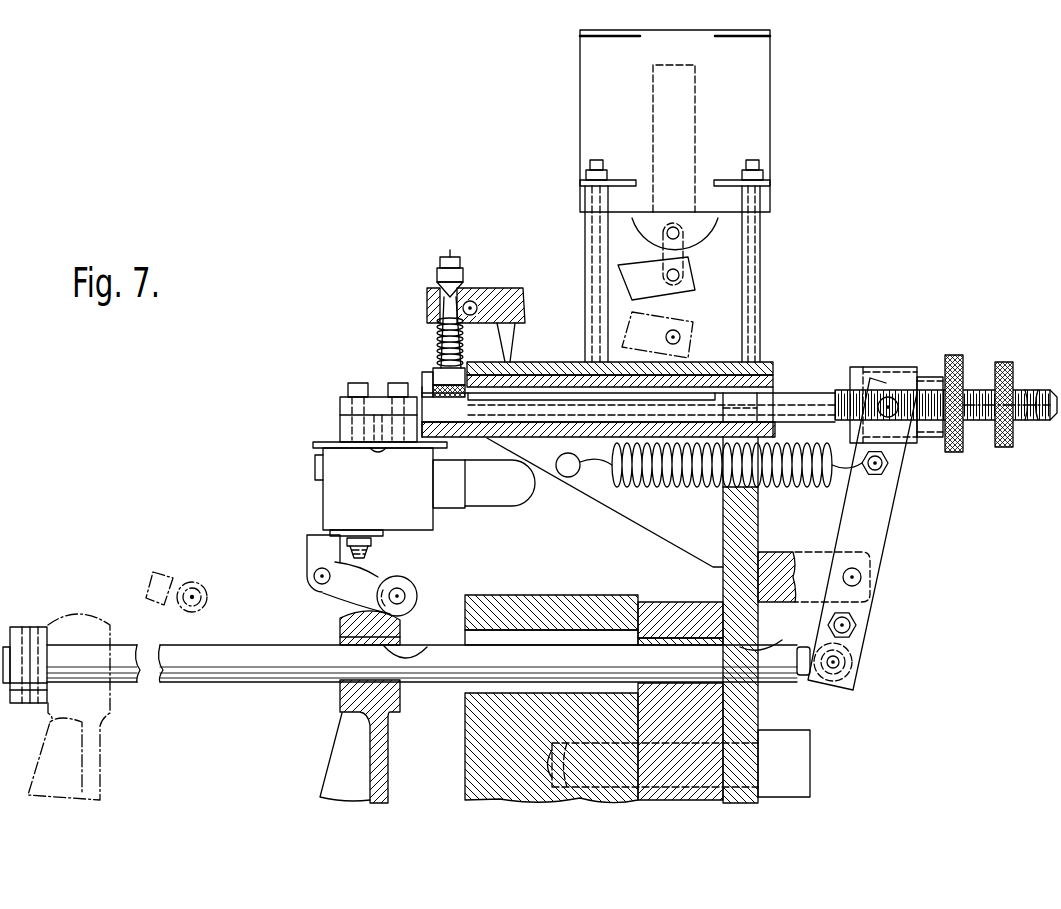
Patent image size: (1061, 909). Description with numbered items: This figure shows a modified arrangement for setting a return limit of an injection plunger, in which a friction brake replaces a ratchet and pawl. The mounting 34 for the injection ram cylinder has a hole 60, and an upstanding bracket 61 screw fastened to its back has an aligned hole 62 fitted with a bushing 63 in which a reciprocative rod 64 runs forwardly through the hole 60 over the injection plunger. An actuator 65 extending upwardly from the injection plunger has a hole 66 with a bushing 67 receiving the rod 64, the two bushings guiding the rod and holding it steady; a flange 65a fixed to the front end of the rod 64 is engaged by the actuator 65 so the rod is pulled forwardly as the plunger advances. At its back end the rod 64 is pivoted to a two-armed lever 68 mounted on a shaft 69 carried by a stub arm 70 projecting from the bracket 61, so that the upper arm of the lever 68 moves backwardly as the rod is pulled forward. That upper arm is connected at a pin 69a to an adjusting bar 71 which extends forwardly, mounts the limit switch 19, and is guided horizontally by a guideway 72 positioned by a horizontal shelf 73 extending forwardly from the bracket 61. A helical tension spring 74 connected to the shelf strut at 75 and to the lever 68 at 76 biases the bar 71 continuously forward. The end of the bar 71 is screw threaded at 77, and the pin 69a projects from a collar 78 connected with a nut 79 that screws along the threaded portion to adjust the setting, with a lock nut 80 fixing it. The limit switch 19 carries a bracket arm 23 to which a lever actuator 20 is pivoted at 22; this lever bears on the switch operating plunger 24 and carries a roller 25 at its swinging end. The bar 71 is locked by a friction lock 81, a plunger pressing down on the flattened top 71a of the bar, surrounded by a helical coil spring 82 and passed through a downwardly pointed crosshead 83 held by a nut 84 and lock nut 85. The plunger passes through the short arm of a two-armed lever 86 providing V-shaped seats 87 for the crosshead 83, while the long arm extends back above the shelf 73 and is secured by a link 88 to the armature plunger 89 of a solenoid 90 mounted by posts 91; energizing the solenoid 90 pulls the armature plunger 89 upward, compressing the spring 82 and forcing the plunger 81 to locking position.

The limit switch 19 is at (428, 518).
The actuator 20 is at (375, 577).
The pivot 22 is at (318, 583).
The arm of bracket 23 is at (307, 553).
The operating plunger 24 is at (373, 553).
The roller 25 is at (417, 593).
The mounting 34 is at (548, 597).
The hole 60 is at (465, 693).
The bracket 61 is at (762, 710).
The hole 62 is at (766, 647).
The bushing 63 is at (675, 602).
The reciprocative rod 64 is at (233, 673).
The actuator 65 is at (343, 725).
The flange 65a is at (25, 627).
The hole 66 is at (420, 650).
The bushing 67 is at (340, 643).
The two-armed lever 68 is at (887, 527).
The shaft 69 is at (862, 577).
The pin or pivot 69a is at (892, 396).
The stub arm 70 is at (815, 552).
The adjusting bar 71 is at (805, 393).
The flattened portion 71a is at (692, 393).
The guideway 72 is at (778, 382).
The horizontal shelf 73 is at (542, 363).
The helical tension spring 74 is at (665, 485).
The spring connection 75 is at (567, 473).
The spring connection 76 is at (890, 468).
The screw threaded end 77 is at (1025, 423).
The collar 78 is at (878, 367).
The nut 79 is at (963, 450).
The lock nut 80 is at (1007, 360).
The friction lock 81 is at (442, 375).
The helical coil spring 82 is at (438, 337).
The crosshead 83 is at (458, 290).
The nut 84 is at (437, 275).
The lock nut 85 is at (443, 257).
The two-armed lever 86 is at (516, 302).
The V-shaped seats 87 is at (436, 285).
The link 88 is at (660, 253).
The armature plunger 89 is at (698, 233).
The solenoid 90 is at (762, 118).
The posts 91 is at (767, 263).